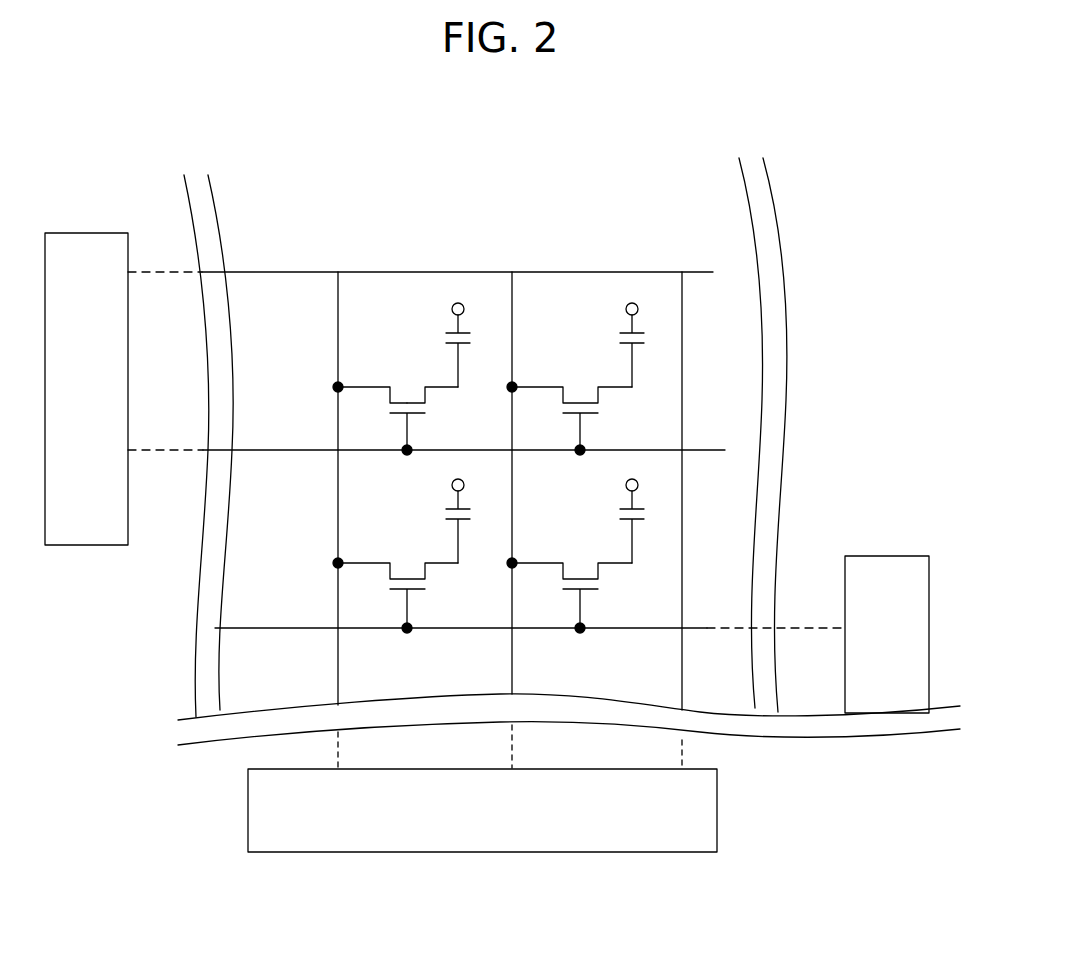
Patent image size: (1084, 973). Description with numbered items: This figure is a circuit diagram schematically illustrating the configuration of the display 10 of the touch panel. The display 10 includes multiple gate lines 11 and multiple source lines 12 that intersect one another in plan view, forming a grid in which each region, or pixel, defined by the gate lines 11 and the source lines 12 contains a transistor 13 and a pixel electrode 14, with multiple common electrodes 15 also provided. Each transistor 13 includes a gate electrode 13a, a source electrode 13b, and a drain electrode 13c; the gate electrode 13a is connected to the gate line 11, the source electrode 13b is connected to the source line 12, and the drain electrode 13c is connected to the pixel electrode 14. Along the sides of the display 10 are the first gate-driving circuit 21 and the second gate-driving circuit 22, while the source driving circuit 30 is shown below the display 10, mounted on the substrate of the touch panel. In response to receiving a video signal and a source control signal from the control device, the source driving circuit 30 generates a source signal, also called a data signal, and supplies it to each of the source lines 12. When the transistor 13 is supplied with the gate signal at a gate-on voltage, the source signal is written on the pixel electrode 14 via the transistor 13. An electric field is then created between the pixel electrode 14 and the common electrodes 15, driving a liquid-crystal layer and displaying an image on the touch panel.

The display 10 is at (597, 207).
The gate line 11 is at (423, 272).
The source line 12 is at (682, 316).
The transistor 13 is at (486, 409).
The gate electrode 13a is at (390, 434).
The source electrode 13b is at (380, 372).
The drain electrode 13c is at (417, 372).
The pixel electrode 14 is at (478, 352).
The common electrode 15 is at (457, 300).
The first gate-driving circuit 21 is at (76, 233).
The second gate-driving circuit 22 is at (877, 556).
The source driving circuit 30 is at (717, 790).